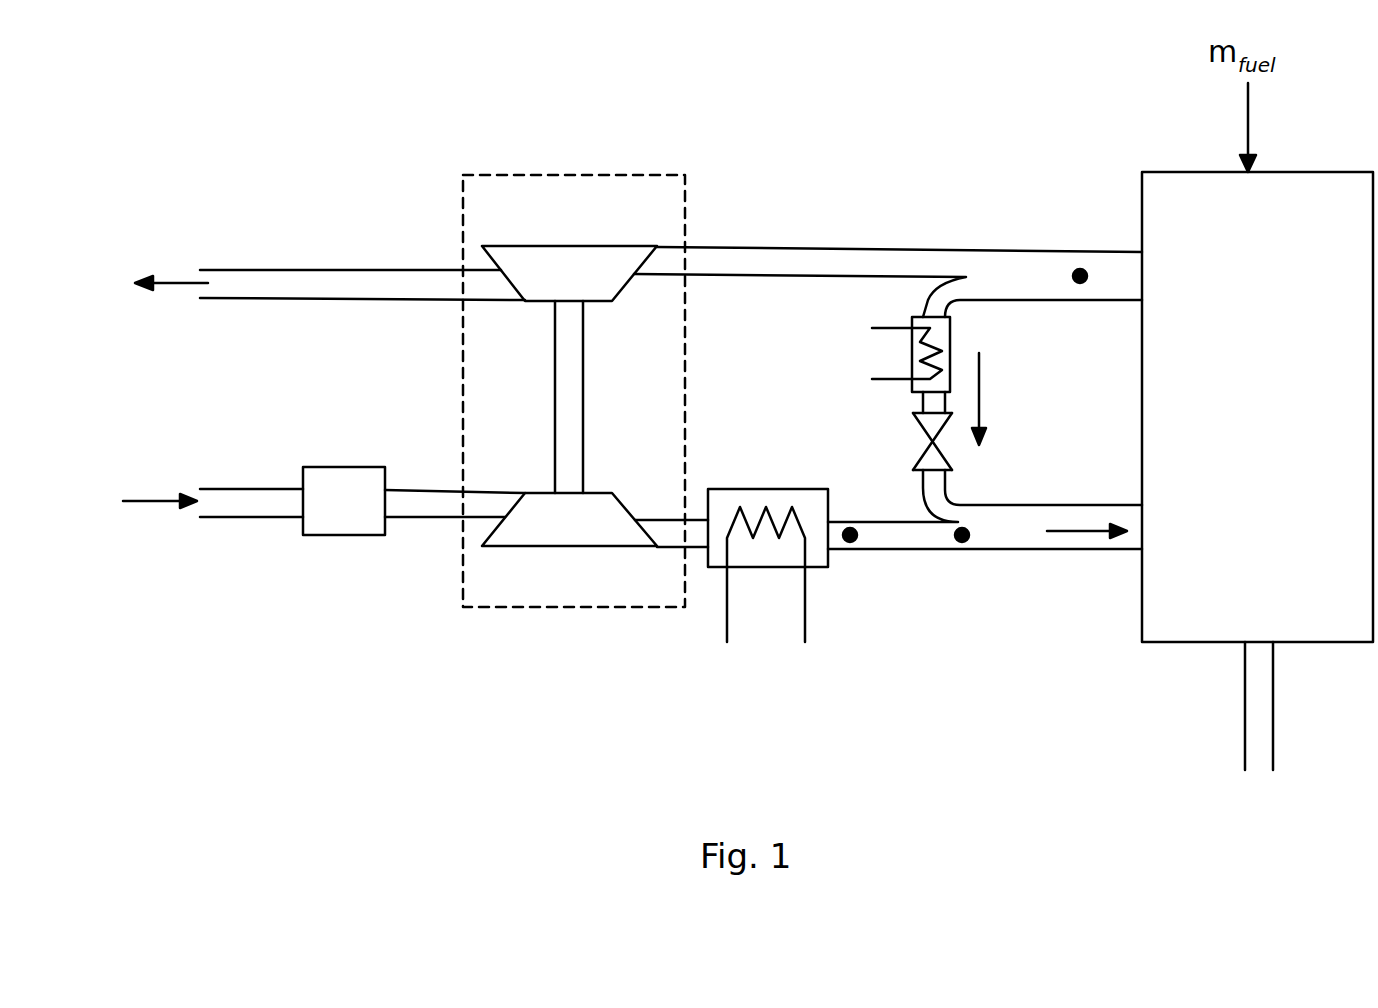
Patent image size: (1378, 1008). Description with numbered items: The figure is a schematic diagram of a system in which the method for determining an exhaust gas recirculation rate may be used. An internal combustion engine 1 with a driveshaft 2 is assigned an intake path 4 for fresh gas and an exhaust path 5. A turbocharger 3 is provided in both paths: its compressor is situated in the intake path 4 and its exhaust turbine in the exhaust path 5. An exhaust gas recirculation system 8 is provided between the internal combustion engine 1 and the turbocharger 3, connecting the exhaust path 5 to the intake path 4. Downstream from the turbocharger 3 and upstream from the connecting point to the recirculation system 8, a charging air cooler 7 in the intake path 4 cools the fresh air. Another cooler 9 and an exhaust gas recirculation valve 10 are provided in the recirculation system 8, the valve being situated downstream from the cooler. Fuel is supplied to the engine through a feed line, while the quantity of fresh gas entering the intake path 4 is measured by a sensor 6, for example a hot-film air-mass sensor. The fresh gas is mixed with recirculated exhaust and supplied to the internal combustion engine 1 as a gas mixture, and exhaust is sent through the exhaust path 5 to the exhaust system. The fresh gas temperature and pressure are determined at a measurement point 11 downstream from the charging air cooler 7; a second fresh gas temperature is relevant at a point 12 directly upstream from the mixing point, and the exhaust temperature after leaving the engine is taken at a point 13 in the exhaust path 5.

The internal combustion engine 1 is at (1268, 425).
The driveshaft 2 is at (1273, 697).
The turbocharger 3 is at (668, 229).
The intake path 4 is at (848, 672).
The exhaust path 5 is at (780, 182).
The sensor 6 is at (333, 535).
The charging air cooler 7 is at (767, 567).
The exhaust gas recirculation system 8 is at (826, 385).
The cooler 9 is at (910, 353).
The exhaust gas recirculation valve 10 is at (928, 437).
The measurement point 11 is at (855, 540).
The point 12 is at (967, 540).
The point 13 is at (1080, 268).